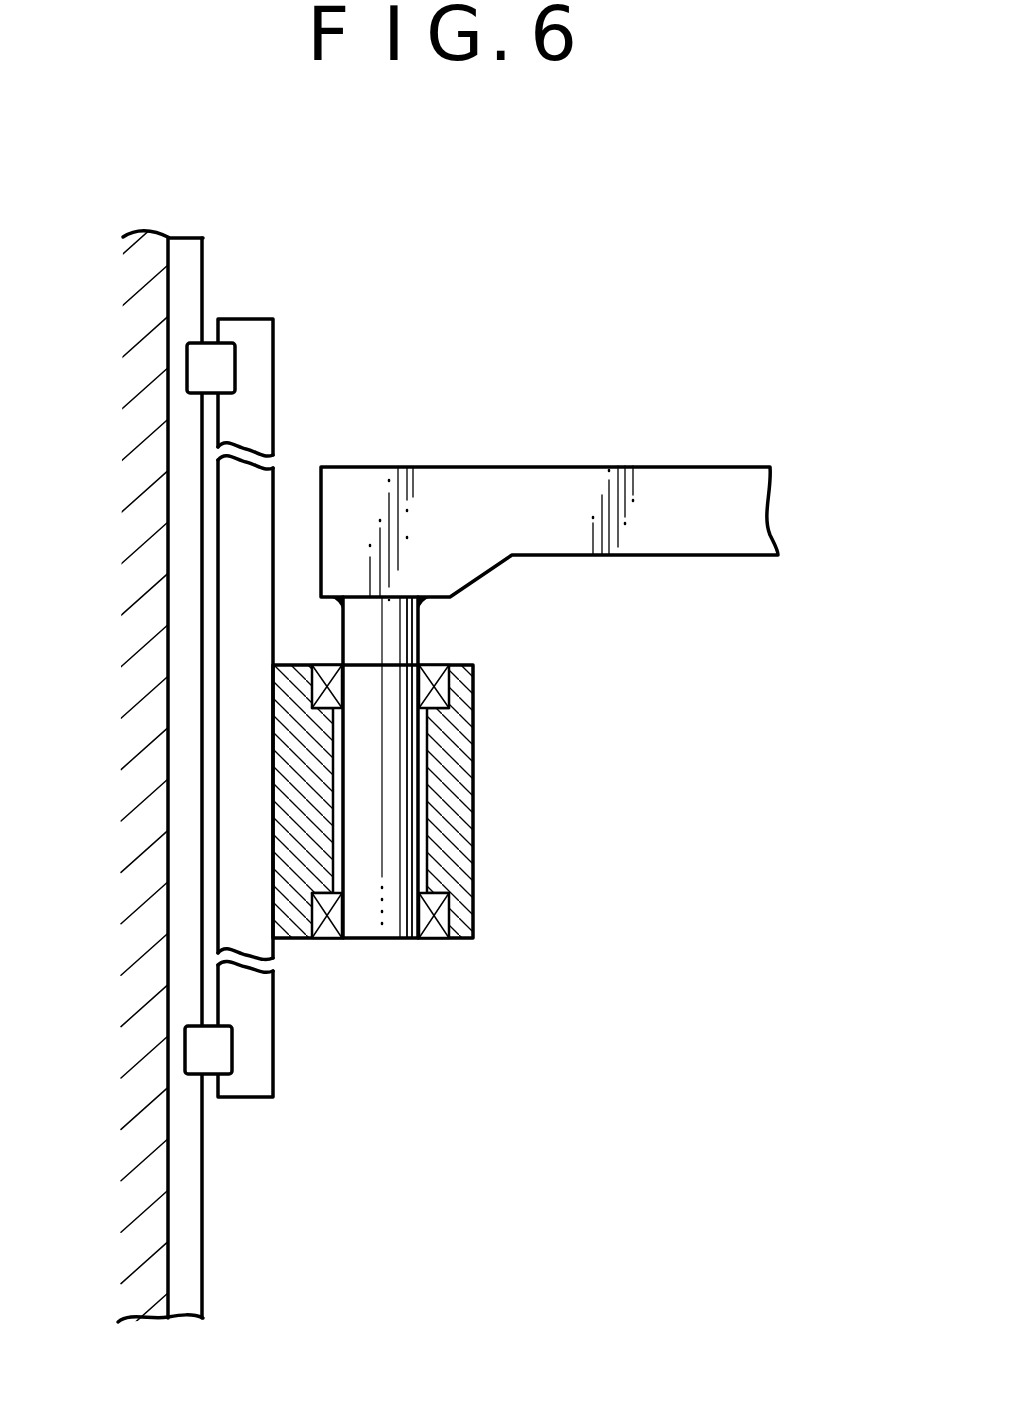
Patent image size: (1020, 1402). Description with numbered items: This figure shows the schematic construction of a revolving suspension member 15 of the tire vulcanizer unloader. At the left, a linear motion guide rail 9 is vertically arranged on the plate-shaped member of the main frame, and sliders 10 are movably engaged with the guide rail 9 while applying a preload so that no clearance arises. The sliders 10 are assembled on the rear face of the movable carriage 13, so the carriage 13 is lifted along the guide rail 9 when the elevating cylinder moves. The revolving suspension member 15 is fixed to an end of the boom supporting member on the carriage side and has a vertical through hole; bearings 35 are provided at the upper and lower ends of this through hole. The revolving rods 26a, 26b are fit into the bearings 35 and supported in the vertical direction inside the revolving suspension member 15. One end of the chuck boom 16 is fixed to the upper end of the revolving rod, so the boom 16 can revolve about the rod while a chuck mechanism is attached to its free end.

The linear motion guide rail 9 is at (190, 1227).
The slider 10 is at (220, 367).
The movable carriage 13 is at (265, 413).
The revolving suspension member 15 is at (457, 770).
The chuck boom 16 is at (528, 477).
The revolving rod 26a is at (393, 860).
The revolving rod 26b is at (546, 767).
The bearing 35 is at (442, 688).